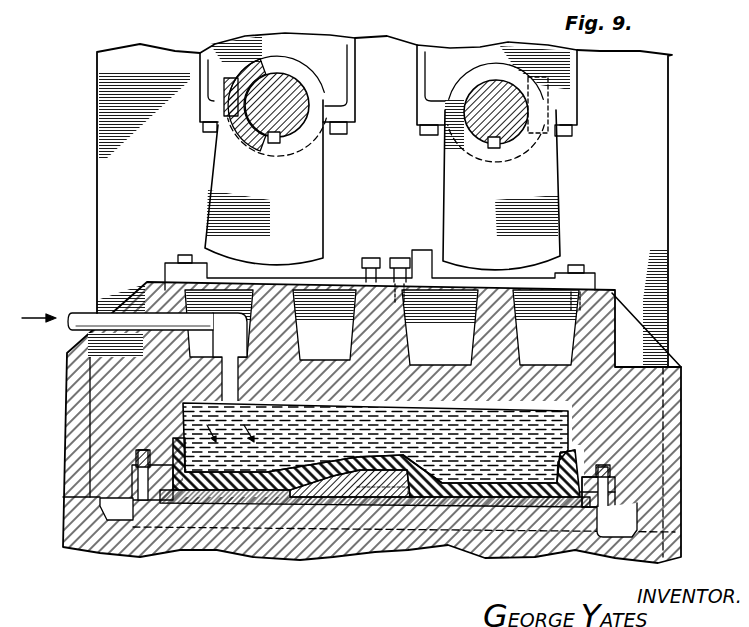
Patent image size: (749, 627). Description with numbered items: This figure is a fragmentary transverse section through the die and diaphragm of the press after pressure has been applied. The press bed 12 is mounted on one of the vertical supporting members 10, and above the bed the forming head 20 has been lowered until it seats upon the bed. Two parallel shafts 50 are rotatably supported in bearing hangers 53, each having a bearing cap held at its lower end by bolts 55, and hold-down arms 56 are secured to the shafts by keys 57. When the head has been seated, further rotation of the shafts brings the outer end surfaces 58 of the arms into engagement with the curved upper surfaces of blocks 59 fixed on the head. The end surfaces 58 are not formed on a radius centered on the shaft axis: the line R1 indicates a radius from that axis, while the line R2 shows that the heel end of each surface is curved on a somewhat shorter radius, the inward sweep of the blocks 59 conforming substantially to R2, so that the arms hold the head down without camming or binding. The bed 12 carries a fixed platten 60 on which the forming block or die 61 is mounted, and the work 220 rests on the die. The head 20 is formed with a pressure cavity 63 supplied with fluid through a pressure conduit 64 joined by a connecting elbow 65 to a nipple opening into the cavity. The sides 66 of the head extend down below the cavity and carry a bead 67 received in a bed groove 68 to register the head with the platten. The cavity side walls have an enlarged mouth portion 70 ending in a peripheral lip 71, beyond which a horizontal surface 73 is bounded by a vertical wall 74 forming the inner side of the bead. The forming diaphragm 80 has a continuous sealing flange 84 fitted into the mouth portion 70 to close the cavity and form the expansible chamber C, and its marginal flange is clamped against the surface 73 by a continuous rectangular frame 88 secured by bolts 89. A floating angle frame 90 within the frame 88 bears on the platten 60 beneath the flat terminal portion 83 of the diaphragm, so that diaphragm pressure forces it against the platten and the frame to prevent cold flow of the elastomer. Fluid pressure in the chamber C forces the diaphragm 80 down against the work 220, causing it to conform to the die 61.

The supporting member 10 is at (652, 160).
The press bed 12 is at (247, 543).
The forming head 20 is at (692, 364).
The shaft 50 is at (300, 97).
The bearing hanger 53 is at (333, 70).
The bolt 55 is at (347, 132).
The hold-down arm 56 is at (305, 198).
The key 57 is at (276, 144).
The end surface 58 is at (205, 250).
The block 59 is at (305, 275).
The platten 60 is at (217, 497).
The forming block 61 is at (382, 490).
The pressure cavity 63 is at (535, 410).
The pressure conduit 64 is at (72, 312).
The connecting elbow 65 is at (241, 320).
The side 66 is at (90, 480).
The bead 67 is at (113, 511).
The bed groove 68 is at (110, 523).
The mouth portion 70 is at (180, 442).
The peripheral lip 71 is at (569, 474).
The horizontal surface 73 is at (616, 474).
The vertical wall 74 is at (616, 493).
The forming diaphragm 80 is at (416, 440).
The terminal portion 83 is at (142, 15).
The sealing flange 84 is at (173, 463).
The frame 88 is at (609, 507).
The bolt 89 is at (680, 545).
The floating angle frame 90 is at (153, 502).
The work 220 is at (330, 500).
The expansible chamber C is at (326, 432).
The radius R1 is at (496, 112).
The radius R2 is at (467, 257).